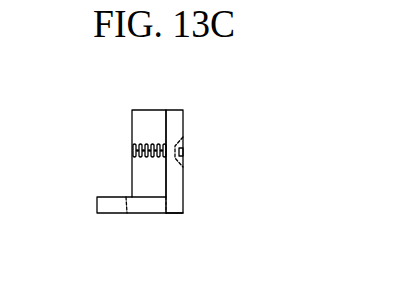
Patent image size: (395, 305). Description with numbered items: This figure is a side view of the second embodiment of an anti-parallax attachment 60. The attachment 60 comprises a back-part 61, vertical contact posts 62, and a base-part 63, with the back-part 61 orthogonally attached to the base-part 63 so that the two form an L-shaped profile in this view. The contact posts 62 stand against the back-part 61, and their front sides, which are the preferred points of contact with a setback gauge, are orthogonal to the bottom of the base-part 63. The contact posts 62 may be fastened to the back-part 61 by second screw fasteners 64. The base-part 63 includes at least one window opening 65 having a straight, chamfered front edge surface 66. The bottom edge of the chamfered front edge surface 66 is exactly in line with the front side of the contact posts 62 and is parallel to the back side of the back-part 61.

The anti-parallax attachment 60 is at (162, 176).
The back-part 61 is at (178, 120).
The vertical contact posts 62 is at (140, 129).
The base-part 63 is at (100, 203).
The second screw fasteners 64 is at (183, 152).
The window opening 65 is at (150, 203).
The chamfered front edge surface 66 is at (127, 203).